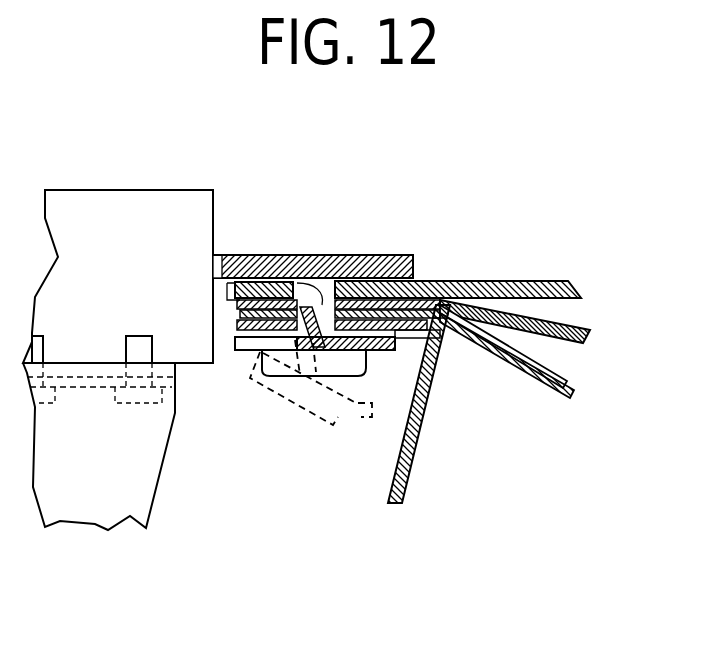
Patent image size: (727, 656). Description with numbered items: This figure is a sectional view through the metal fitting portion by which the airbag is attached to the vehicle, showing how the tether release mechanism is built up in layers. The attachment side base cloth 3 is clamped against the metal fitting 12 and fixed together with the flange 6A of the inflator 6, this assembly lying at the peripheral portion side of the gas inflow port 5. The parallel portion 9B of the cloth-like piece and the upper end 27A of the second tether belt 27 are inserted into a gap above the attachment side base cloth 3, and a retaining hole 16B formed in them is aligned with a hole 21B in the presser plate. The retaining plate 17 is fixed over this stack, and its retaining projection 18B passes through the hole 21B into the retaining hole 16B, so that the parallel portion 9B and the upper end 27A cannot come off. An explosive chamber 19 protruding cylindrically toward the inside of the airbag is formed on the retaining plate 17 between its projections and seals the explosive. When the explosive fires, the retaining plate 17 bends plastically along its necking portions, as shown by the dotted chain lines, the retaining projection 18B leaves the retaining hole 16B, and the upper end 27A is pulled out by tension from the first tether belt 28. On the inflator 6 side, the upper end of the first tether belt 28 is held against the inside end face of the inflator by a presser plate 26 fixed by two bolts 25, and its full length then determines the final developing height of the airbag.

The attachment side base cloth 3 is at (582, 330).
The gas inflow port 5 is at (233, 255).
The inflator 6 is at (90, 208).
The flange of the inflator 6A is at (257, 255).
The parallel portion 9B is at (562, 366).
The metal fitting 12 is at (498, 280).
The retaining hole 16B is at (305, 300).
The retaining plate 17 is at (383, 350).
The retaining projection 18B is at (355, 255).
The explosive chamber 19 is at (352, 363).
The hole in the presser plate 21B is at (305, 345).
The bolt 25 is at (138, 400).
The presser plate 26 is at (75, 380).
The second tether belt 27 is at (403, 476).
The upper end of the second tether belt 27A is at (445, 328).
The first tether belt 28 is at (112, 513).